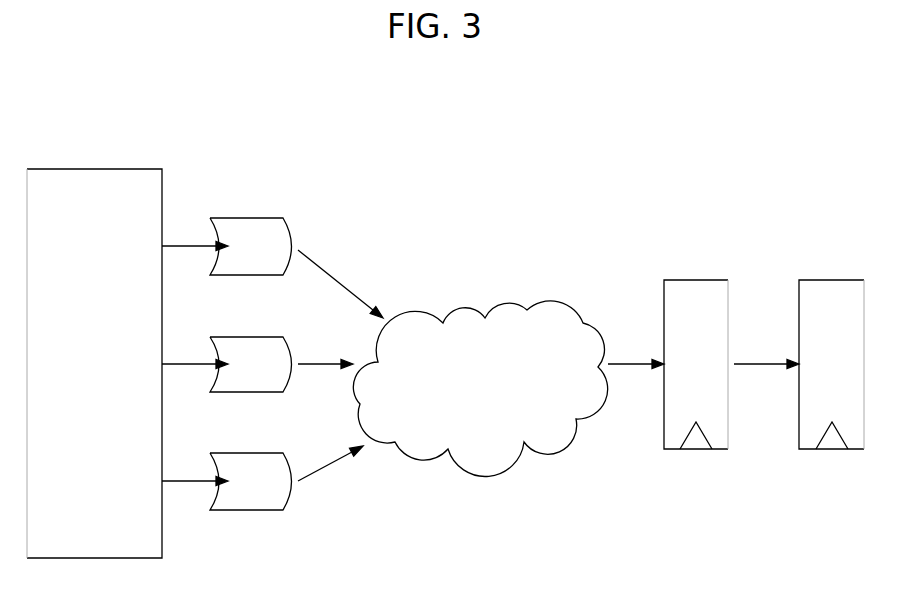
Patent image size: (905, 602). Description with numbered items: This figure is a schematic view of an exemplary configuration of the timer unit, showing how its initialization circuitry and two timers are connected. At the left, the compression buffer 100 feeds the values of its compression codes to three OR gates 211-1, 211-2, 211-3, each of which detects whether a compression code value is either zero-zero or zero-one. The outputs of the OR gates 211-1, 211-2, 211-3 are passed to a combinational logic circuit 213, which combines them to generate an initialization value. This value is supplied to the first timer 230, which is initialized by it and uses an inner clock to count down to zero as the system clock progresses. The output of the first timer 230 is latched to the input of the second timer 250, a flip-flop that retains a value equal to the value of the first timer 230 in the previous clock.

The compression buffer 100 is at (95, 169).
The OR gate 211-1 is at (248, 218).
The OR gate 211-2 is at (248, 337).
The OR gate 211-3 is at (248, 453).
The combinational logic circuit 213 is at (461, 305).
The first timer 230 is at (697, 280).
The second timer 250 is at (833, 280).